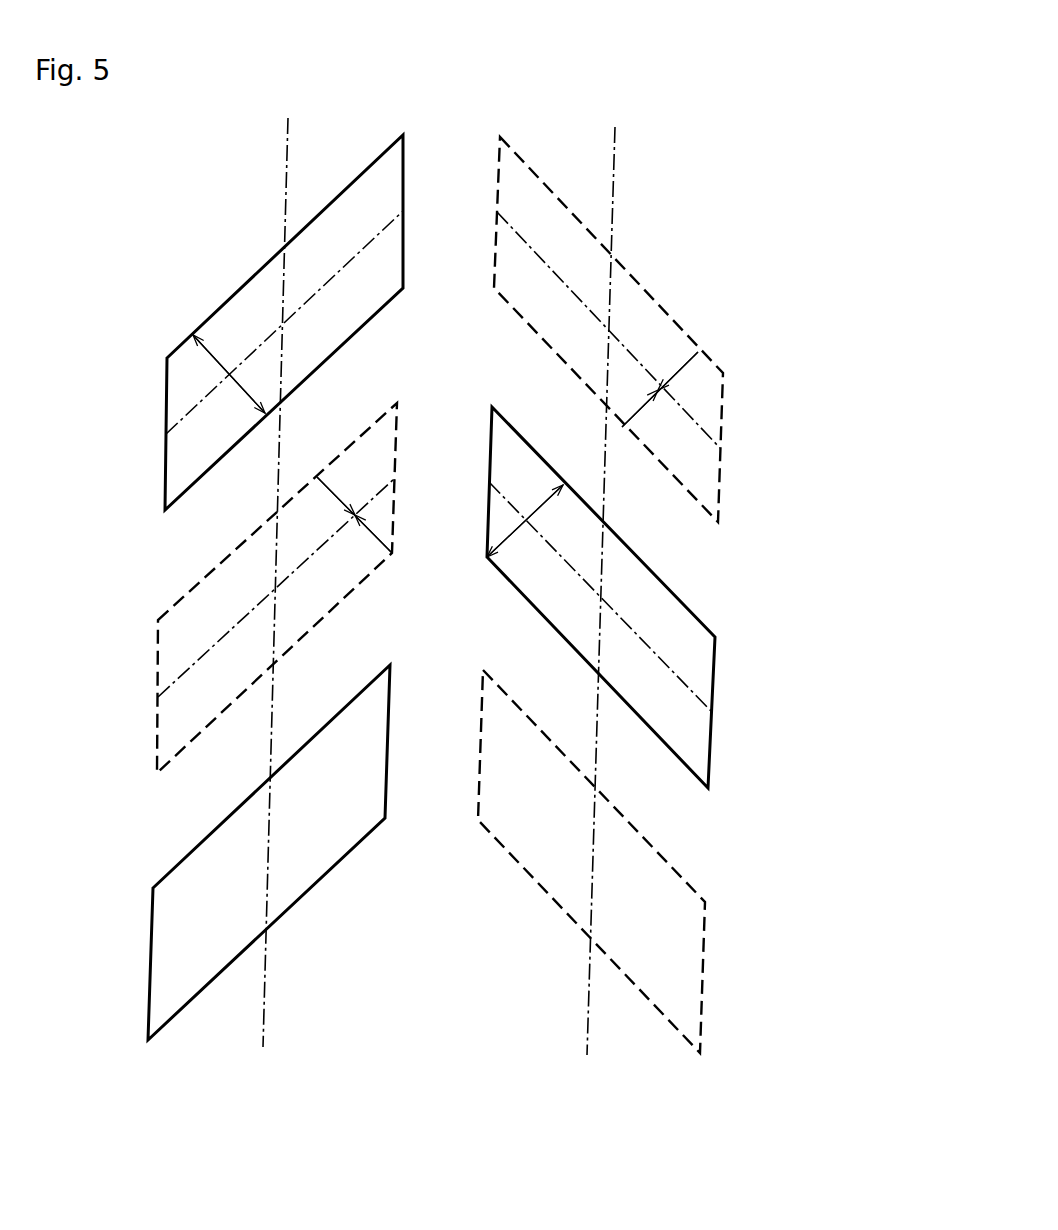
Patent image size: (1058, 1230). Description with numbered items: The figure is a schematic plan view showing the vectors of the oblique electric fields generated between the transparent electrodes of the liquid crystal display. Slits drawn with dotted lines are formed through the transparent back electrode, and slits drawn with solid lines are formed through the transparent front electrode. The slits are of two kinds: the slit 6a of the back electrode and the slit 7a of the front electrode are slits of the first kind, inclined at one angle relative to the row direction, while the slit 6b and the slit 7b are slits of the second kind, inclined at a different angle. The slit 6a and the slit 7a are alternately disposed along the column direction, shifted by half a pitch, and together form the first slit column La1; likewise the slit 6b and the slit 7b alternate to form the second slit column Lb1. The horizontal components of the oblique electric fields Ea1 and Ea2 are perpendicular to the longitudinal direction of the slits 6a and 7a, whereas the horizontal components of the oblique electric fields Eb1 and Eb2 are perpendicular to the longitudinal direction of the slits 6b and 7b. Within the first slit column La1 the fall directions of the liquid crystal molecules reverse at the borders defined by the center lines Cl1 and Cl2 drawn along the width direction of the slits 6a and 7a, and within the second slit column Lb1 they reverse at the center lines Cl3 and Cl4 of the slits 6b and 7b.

The slit of the first kind 7a is at (163, 388).
The slit of the second kind 7b is at (693, 614).
The slit of the first kind 6a is at (170, 609).
The slit of the second kind 6b is at (657, 304).
The center line Cl1 is at (393, 483).
The center line Cl2 is at (378, 234).
The center line Cl3 is at (500, 223).
The center line Cl4 is at (692, 690).
The first slit column La1 is at (284, 569).
The second slit column Lb1 is at (610, 578).
The oblique electric field Ea1 is at (292, 444).
The oblique electric field Ea2 is at (283, 455).
The oblique electric field Eb1 is at (592, 451).
The oblique electric field Eb2 is at (592, 454).